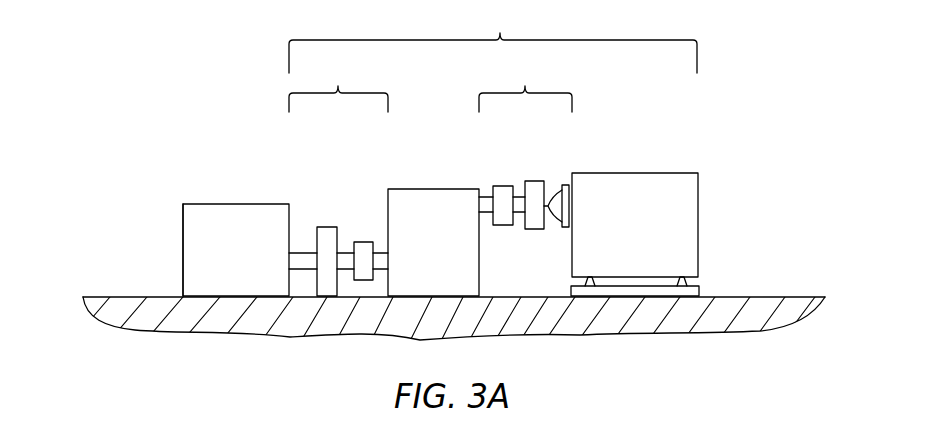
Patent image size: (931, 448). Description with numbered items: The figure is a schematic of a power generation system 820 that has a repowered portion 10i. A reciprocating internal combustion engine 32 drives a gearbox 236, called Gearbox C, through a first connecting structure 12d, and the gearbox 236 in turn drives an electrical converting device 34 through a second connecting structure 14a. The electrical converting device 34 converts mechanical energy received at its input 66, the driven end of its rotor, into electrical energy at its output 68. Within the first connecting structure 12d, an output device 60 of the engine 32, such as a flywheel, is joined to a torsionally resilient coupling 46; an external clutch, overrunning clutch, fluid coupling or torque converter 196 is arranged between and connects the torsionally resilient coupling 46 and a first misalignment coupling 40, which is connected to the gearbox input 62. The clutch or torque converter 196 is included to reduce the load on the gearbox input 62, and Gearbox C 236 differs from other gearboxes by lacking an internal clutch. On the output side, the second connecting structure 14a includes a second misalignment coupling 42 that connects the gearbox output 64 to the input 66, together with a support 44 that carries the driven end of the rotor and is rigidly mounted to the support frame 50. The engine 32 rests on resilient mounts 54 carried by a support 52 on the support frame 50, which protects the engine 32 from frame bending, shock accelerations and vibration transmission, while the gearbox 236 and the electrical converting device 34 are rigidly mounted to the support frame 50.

The repowered portion 10i is at (493, 38).
The first connecting structure 12d is at (525, 84).
The second connecting structure 14a is at (338, 86).
The reciprocating internal combustion engine 32 is at (685, 185).
The electrical converting device 34 is at (220, 212).
The first misalignment coupling 40 is at (503, 190).
The second misalignment coupling 42 is at (367, 246).
The support 44 is at (327, 233).
The torsionally resilient coupling 46 is at (550, 200).
The support frame 50 is at (103, 296).
The support 52 is at (658, 292).
The resilient mount 54 is at (688, 283).
The output device 60 is at (572, 197).
The gearbox input 62 is at (485, 203).
The gearbox output 64 is at (383, 258).
The input 66 is at (303, 257).
The output 68 is at (186, 240).
The external clutch, overrunning clutch, fluid coupling or torque converter 196 is at (538, 187).
The gearbox 236 is at (428, 197).
The power generation system 820 is at (708, 110).